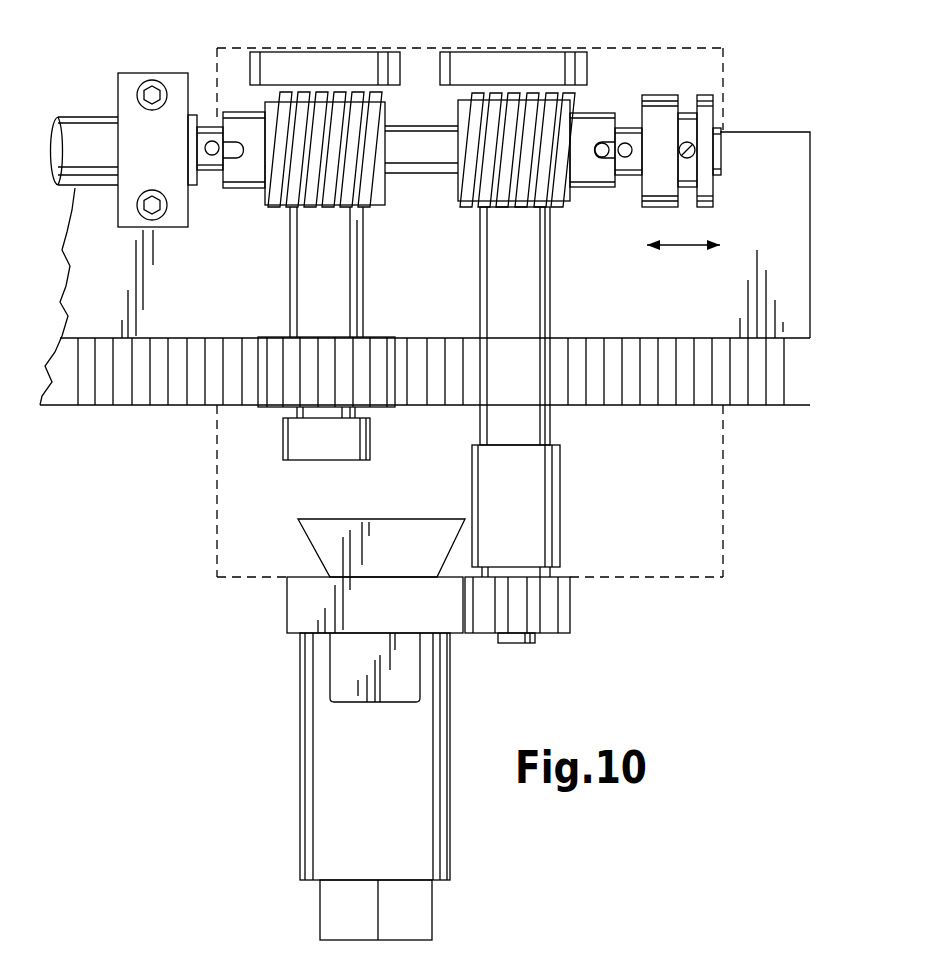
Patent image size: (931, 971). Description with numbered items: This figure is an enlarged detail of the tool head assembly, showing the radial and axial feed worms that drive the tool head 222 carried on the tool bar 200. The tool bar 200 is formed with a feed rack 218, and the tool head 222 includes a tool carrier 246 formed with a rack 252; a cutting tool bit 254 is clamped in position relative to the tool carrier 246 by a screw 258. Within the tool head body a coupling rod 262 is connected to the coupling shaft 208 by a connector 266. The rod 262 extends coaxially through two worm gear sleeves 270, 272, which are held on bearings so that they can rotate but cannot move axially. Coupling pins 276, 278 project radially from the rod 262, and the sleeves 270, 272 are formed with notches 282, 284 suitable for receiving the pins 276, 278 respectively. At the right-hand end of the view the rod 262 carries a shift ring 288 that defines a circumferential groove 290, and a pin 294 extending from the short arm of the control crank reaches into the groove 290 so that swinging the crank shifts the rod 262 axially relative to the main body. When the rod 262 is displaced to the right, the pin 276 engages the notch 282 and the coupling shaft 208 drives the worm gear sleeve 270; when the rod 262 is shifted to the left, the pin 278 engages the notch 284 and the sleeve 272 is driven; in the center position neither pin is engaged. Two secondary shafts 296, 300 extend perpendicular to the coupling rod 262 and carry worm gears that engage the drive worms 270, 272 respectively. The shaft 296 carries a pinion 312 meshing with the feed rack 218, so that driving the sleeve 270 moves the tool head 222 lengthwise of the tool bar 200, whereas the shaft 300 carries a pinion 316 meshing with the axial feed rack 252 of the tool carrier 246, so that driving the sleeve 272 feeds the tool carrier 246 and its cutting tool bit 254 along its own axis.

The tool bar 200 is at (782, 275).
The coupling shaft 208 is at (80, 117).
The feed rack 218 is at (790, 407).
The tool head 222 is at (195, 502).
The tool carrier 246 is at (300, 607).
The rack 252 is at (465, 602).
The cutting tool bit 254 is at (345, 668).
The screw 258 is at (320, 913).
The coupling rod 262 is at (207, 127).
The connector 266 is at (140, 73).
The worm gear sleeve 270 is at (250, 190).
The worm gear sleeve 272 is at (600, 188).
The coupling pin 276 is at (212, 156).
The coupling pin 278 is at (626, 158).
The notch 282 is at (240, 140).
The notch 284 is at (604, 142).
The shift ring 288 is at (660, 95).
The circumferential groove 290 is at (687, 202).
The pin 294 is at (698, 153).
The secondary shaft 296 is at (335, 295).
The secondary shaft 300 is at (502, 235).
The pinion 312 is at (277, 337).
The pinion 316 is at (572, 610).